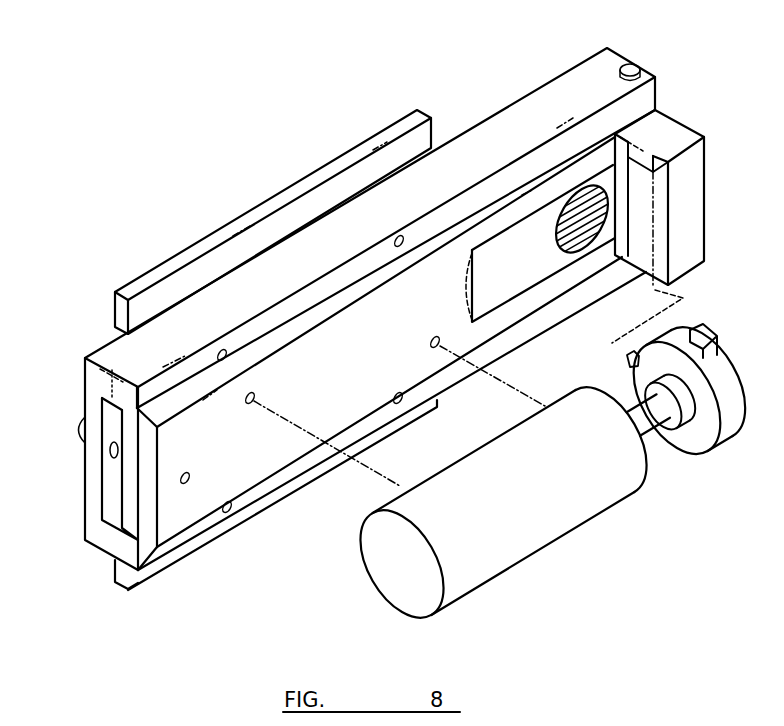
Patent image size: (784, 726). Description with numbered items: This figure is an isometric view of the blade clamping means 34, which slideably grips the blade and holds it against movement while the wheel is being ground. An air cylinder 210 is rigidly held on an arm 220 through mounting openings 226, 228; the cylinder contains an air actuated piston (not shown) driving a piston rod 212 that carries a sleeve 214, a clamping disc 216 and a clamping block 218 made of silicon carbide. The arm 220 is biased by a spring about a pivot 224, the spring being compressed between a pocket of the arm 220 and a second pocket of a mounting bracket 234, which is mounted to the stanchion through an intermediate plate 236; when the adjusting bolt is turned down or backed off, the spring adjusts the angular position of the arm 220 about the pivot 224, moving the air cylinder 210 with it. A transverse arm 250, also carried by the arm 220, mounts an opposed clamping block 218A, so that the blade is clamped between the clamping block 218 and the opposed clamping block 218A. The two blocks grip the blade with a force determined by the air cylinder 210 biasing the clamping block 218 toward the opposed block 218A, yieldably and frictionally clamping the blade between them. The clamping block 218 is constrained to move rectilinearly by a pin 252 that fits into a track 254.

The roller assembly body 34 is at (401, 105).
The intermediate plate 236 is at (345, 165).
The pivot 224 is at (631, 64).
The transverse arm 250 is at (675, 135).
The opposed clamping block 218A is at (647, 160).
The track 254 is at (586, 214).
The arm 220 is at (242, 465).
The mounting opening 228 is at (250, 393).
The mounting opening 226 is at (437, 348).
The mounting bracket 234 is at (108, 357).
The air cylinder 210 is at (528, 520).
The piston rod 212 is at (642, 421).
The sleeve 214 is at (678, 412).
The clamping disc 216 is at (718, 378).
The clamping block 218 is at (701, 328).
The pin 252 is at (626, 357).